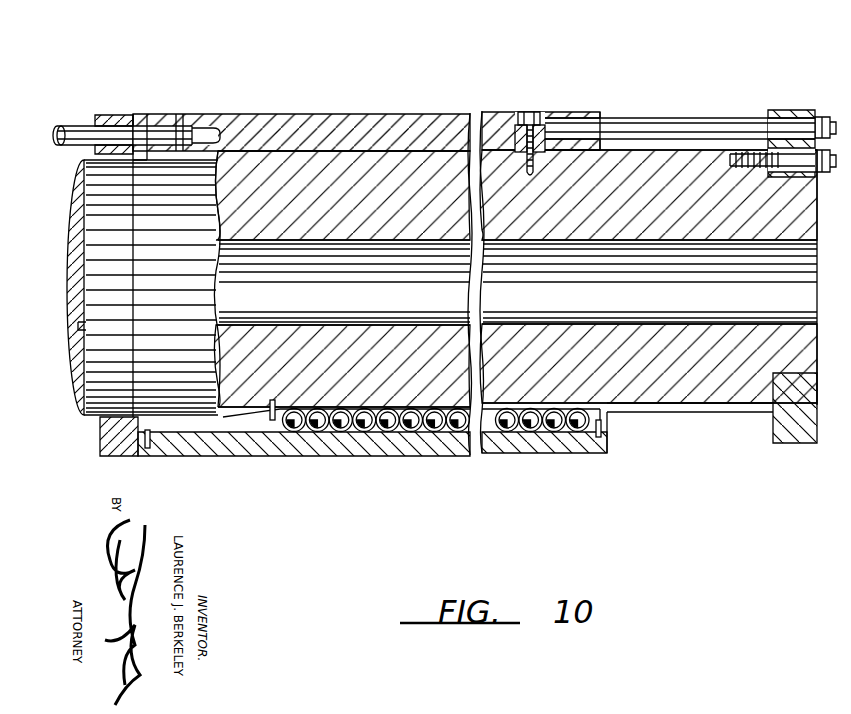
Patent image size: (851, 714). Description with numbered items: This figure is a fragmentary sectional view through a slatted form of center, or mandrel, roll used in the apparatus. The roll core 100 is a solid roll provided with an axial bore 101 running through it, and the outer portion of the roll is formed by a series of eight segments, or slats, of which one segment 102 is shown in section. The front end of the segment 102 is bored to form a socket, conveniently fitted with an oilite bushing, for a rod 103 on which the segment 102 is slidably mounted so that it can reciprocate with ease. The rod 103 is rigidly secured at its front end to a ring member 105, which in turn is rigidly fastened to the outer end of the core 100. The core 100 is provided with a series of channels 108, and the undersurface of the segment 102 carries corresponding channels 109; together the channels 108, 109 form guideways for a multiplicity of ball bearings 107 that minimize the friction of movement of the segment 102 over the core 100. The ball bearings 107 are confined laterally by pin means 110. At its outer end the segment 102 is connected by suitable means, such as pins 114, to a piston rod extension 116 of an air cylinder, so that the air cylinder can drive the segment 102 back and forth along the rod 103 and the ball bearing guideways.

The roll core 100 is at (300, 161).
The axial bore 101 is at (813, 293).
The segment 102 is at (497, 112).
The rod 103 is at (651, 121).
The ring member 105 is at (790, 111).
The ball bearings 107 is at (384, 432).
The channels 108 is at (684, 404).
The channels 109 is at (823, 156).
The pin means 110 is at (269, 420).
The pins 114 is at (176, 123).
The piston rod extension 116 is at (78, 132).